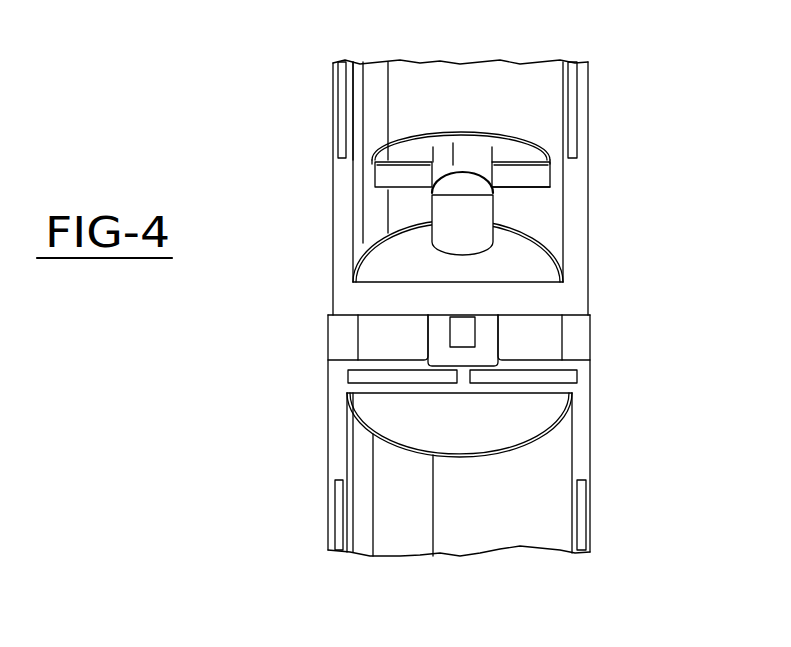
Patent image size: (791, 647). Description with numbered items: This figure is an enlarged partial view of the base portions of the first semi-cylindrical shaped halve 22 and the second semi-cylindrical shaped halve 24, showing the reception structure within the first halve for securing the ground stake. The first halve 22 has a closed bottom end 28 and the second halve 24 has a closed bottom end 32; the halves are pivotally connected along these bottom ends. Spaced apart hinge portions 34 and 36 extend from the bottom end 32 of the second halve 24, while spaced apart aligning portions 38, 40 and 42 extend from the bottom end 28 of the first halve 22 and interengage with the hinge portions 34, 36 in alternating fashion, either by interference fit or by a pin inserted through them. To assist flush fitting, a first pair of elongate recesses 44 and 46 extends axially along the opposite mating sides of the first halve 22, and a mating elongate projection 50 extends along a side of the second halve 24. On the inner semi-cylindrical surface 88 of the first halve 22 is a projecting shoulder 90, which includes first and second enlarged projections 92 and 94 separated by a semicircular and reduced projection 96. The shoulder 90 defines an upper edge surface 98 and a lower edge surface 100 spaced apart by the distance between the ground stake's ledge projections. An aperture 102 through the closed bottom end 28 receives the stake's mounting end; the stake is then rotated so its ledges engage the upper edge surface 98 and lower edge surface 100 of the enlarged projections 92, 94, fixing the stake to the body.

The first semi-cylindrical shaped halve 22 is at (427, 157).
The second semi-cylindrical shaped halve 24 is at (423, 423).
The closed bottom end 28 is at (535, 268).
The closed bottom end 32 is at (468, 434).
The hinge portion 34 is at (327, 347).
The hinge portion 36 is at (538, 358).
The aligning portion 38 is at (335, 330).
The aligning portion 40 is at (430, 330).
The aligning portion 42 is at (583, 342).
The elongate extending recess 44 is at (333, 73).
The elongate extending recess 46 is at (588, 102).
The elongate extending projection 50 is at (588, 520).
The inner semi-cylindrical shaped surface 88 is at (410, 107).
The projecting shoulder 90 is at (460, 96).
The first enlarged projection 92 is at (398, 150).
The second enlarged projection 94 is at (477, 150).
The semicircular and reduced projection 96 is at (453, 140).
The upper edge surface 98 is at (520, 150).
The lower edge surface 100 is at (527, 188).
The aperture 102 is at (438, 235).